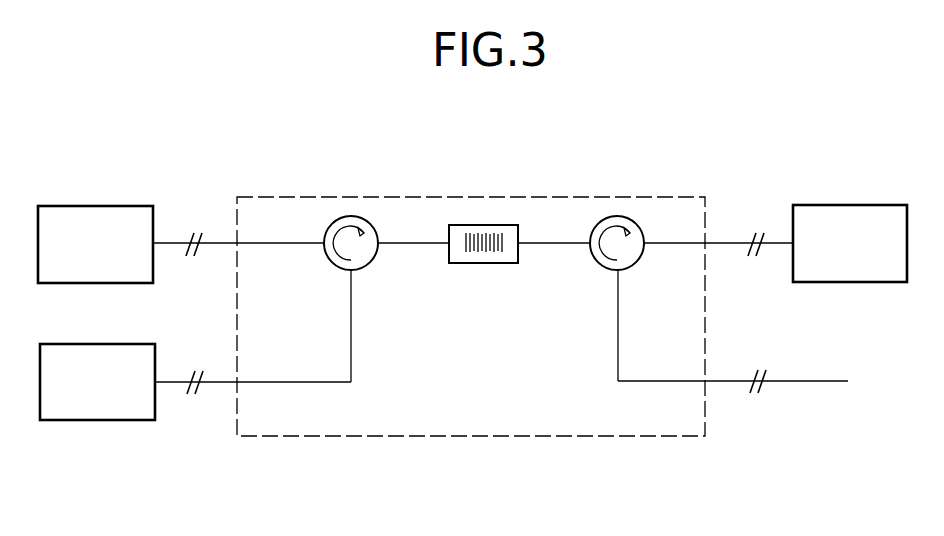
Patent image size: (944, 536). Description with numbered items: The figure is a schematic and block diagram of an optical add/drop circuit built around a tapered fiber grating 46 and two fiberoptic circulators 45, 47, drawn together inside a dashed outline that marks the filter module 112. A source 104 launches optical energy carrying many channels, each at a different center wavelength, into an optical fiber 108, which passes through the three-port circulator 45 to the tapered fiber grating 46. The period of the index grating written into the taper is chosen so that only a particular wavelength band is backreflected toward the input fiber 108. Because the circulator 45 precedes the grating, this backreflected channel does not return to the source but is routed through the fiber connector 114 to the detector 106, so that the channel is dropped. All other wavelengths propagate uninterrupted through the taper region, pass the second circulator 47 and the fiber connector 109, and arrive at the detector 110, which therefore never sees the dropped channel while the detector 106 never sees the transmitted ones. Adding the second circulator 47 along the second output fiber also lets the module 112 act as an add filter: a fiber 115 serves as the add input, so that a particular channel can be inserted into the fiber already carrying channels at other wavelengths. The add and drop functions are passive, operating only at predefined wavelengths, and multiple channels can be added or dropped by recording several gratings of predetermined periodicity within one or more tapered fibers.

The source 104 is at (98, 205).
The detector 106 is at (90, 422).
The optical fiber 108 is at (197, 232).
The fiber connector 109 is at (757, 232).
The detector 110 is at (843, 205).
The tunable filter module 112 is at (482, 197).
The fiber connector 114 is at (190, 398).
The fiber 115 is at (752, 392).
The circulator 45 is at (353, 215).
The tapered fiber grating 46 is at (485, 263).
The circulator 47 is at (620, 215).